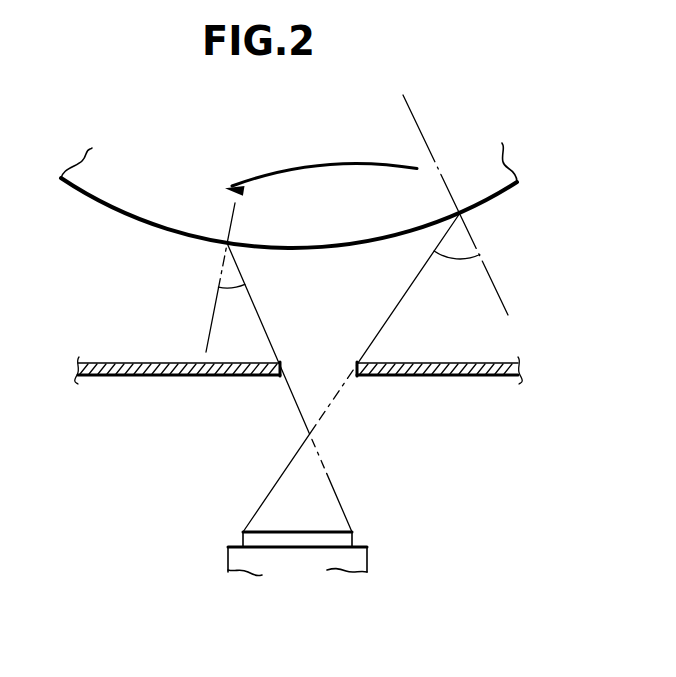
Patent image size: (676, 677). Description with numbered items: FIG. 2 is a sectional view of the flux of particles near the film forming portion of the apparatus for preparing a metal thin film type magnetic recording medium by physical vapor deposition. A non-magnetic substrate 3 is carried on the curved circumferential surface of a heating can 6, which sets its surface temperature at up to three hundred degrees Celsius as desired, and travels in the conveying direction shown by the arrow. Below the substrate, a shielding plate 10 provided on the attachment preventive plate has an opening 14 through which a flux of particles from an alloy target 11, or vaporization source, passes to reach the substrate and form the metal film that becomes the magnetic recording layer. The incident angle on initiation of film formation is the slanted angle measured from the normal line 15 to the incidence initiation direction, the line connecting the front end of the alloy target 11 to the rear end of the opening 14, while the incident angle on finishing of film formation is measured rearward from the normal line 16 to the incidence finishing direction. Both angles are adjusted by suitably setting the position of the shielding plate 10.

The non-magnetic substrate 3 is at (140, 223).
The heating can 6 is at (103, 187).
The shielding plate 10 is at (155, 377).
The alloy target 11 is at (346, 539).
The opening 14 is at (332, 372).
The normal line 15 is at (495, 280).
The normal line 16 is at (211, 325).